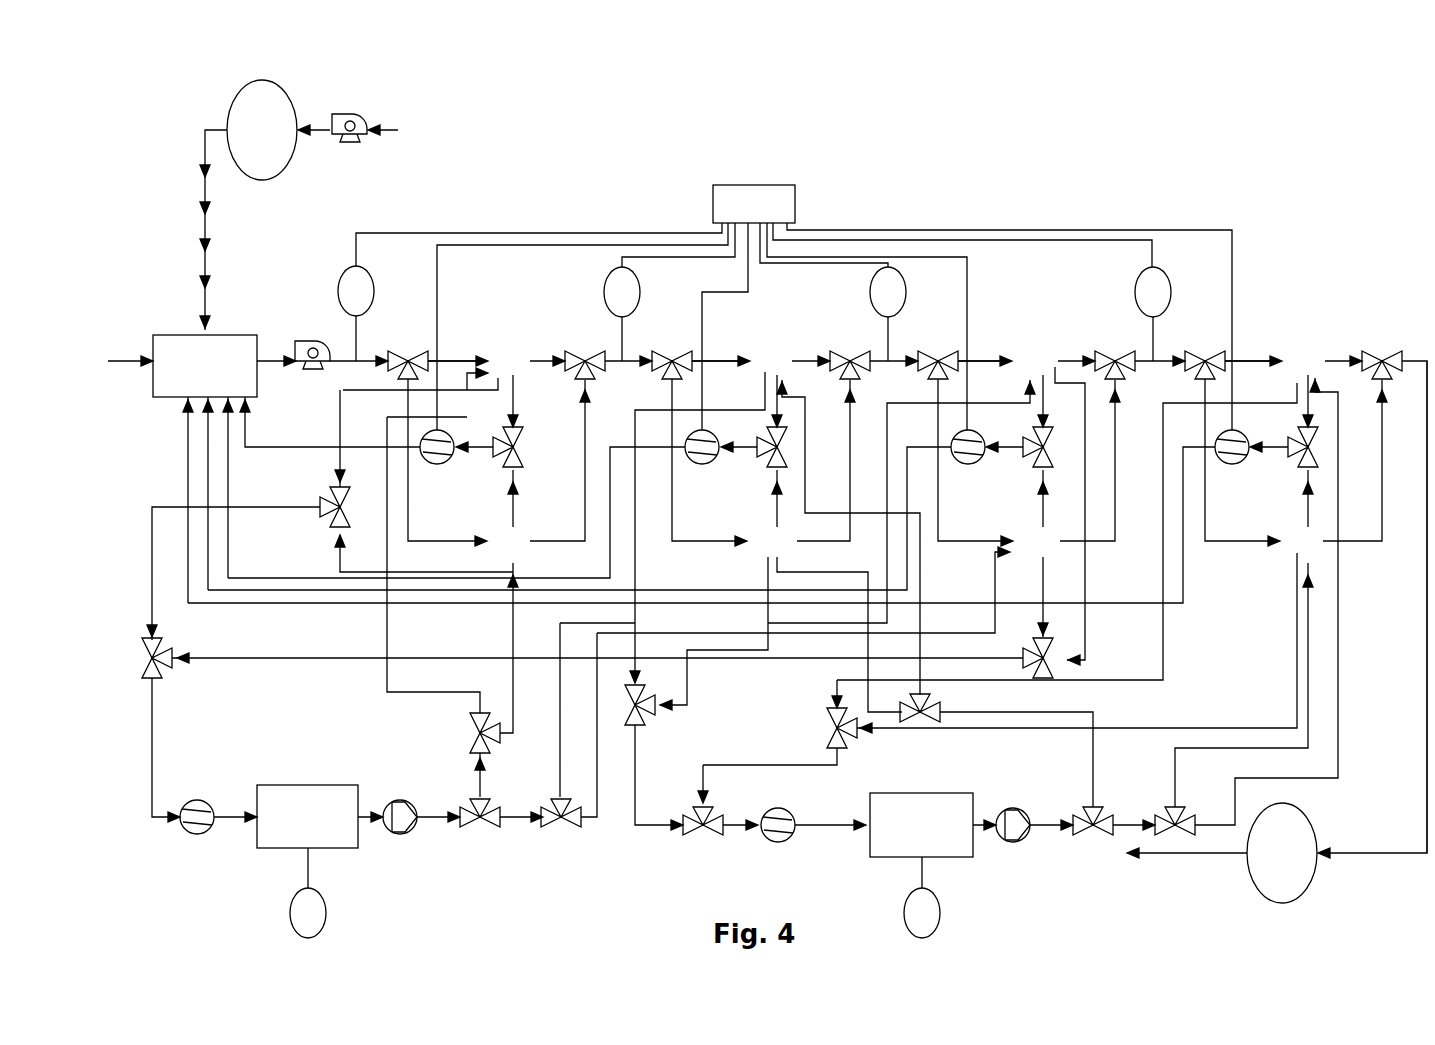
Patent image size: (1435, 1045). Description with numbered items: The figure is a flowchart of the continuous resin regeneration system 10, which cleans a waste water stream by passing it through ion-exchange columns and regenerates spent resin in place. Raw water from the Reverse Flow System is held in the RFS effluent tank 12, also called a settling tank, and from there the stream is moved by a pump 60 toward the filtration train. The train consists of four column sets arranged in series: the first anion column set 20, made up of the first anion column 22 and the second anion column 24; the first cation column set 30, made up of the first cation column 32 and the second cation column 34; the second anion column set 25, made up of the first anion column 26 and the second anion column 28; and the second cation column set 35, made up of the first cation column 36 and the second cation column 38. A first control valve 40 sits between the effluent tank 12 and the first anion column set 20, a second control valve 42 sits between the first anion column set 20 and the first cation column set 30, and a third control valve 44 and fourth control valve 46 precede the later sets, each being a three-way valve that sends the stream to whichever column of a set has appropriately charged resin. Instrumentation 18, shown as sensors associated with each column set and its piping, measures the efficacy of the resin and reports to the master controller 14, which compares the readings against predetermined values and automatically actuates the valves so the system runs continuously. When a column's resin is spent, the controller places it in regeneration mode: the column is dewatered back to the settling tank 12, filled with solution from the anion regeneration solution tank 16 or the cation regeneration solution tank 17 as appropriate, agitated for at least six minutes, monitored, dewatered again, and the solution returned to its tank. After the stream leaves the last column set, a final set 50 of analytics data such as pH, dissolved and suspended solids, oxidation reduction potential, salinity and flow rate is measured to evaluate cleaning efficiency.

The continuous resin regeneration system 10 is at (975, 95).
The RFS effluent tank 12 is at (165, 345).
The master controller 14 is at (780, 190).
The anion regeneration solution tank 16 is at (268, 845).
The cation regeneration solution tank 17 is at (958, 852).
The instrumentation 18 is at (786, 349).
The first anion column set 20 is at (490, 316).
The first anion column 22 is at (510, 340).
The second anion column 24 is at (497, 525).
The second anion column set 25 is at (1013, 316).
The first anion column 26 is at (1040, 345).
The second anion column 28 is at (1032, 557).
The first cation column set 30 is at (806, 281).
The first cation column 32 is at (782, 343).
The second cation column 34 is at (762, 525).
The second cation column set 35 is at (1287, 318).
The first cation column 36 is at (1312, 343).
The second cation column 38 is at (1283, 557).
The first control valve 40 is at (406, 345).
The second control valve 42 is at (670, 345).
The third control valve 44 is at (938, 345).
The fourth control valve 46 is at (1205, 345).
The final set of analytics data 50 is at (1285, 890).
The pump 60 is at (310, 345).